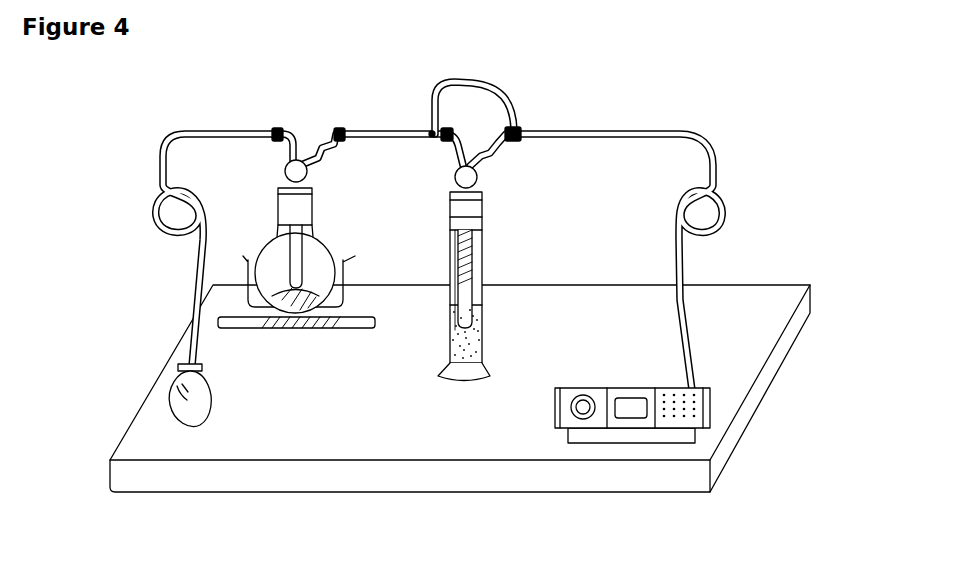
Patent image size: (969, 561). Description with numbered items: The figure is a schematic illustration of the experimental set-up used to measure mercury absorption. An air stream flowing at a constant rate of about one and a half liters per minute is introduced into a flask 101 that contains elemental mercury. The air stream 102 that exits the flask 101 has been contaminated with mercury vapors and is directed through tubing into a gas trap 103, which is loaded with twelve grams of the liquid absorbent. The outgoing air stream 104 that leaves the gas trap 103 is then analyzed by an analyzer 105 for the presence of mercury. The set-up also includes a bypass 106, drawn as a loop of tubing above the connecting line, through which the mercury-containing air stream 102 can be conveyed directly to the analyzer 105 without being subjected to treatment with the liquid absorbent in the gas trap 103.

The flask 101 is at (338, 302).
The air stream 102 is at (173, 393).
The gas trap 103 is at (485, 343).
The outgoing air stream 104 is at (483, 242).
The analyzer 105 is at (713, 407).
The bypass 106 is at (513, 102).